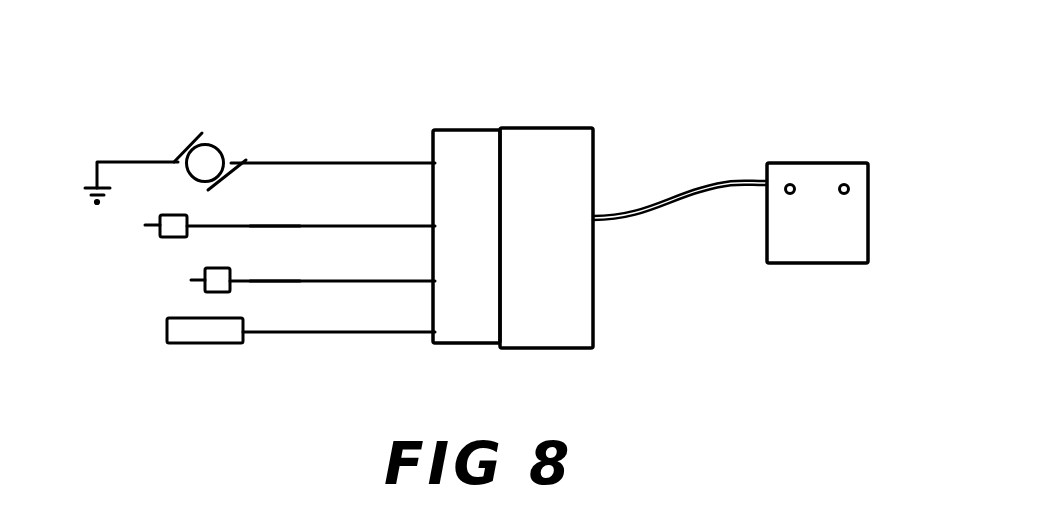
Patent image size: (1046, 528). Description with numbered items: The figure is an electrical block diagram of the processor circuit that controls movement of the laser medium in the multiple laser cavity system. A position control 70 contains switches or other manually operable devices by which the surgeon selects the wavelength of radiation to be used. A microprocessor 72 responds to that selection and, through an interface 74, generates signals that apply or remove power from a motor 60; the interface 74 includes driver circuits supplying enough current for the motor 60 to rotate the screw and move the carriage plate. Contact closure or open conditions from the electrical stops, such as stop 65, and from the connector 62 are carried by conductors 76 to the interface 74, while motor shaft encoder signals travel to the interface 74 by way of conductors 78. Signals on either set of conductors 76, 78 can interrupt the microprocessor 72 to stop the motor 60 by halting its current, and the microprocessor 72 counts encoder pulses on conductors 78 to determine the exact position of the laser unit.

The motor 60 is at (218, 142).
The first connector 62 is at (166, 239).
The electrical stop 65 is at (204, 292).
The position control 70 is at (814, 163).
The microprocessor 72 is at (550, 128).
The interface 74 is at (461, 130).
The conductors 76 is at (270, 223).
The conductors 78 is at (341, 338).